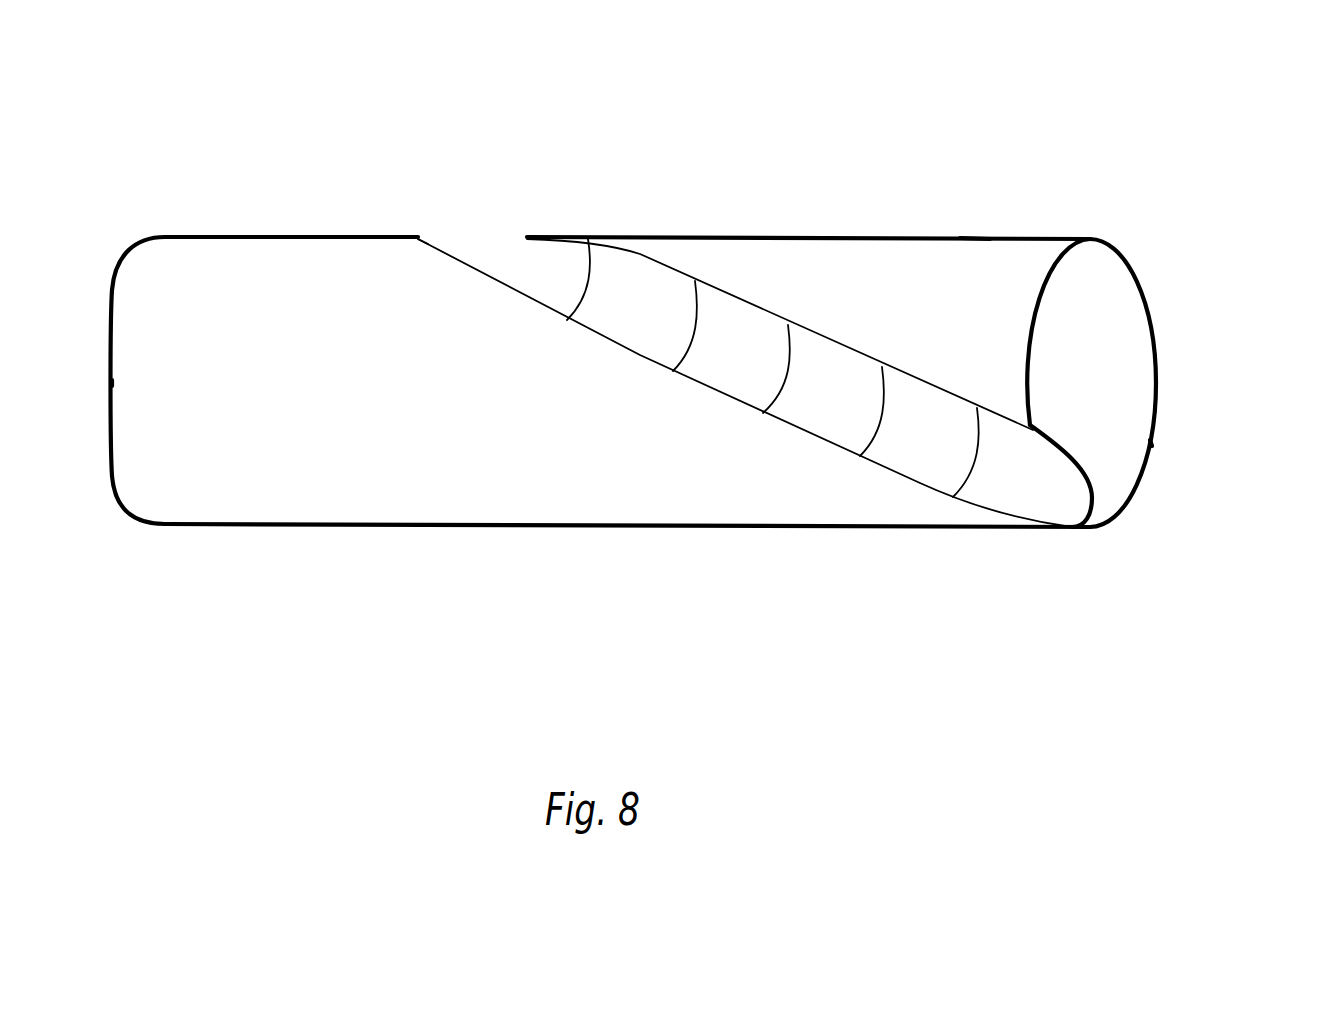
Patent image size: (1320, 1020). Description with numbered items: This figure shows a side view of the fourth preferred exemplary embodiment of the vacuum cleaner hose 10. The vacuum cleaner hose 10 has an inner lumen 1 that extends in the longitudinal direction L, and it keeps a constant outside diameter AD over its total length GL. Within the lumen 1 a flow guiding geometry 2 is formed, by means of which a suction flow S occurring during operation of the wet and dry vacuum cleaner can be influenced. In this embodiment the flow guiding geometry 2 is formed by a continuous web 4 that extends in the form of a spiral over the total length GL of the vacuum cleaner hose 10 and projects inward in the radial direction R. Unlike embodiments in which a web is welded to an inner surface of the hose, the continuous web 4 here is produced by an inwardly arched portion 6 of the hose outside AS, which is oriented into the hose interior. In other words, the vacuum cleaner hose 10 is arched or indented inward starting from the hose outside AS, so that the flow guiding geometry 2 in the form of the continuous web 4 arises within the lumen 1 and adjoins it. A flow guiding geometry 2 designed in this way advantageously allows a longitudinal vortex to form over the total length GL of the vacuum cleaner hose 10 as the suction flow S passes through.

The vacuum cleaner hose 10 is at (915, 147).
The inner lumen 1 is at (1118, 373).
The flow guiding geometry 2 is at (545, 268).
The continuous web 4 is at (1097, 500).
The inwardly arched portion 6 is at (740, 338).
The outside diameter AD is at (216, 232).
The radial direction R is at (428, 213).
The longitudinal direction L is at (560, 85).
The hose outside AS is at (972, 283).
The suction flow S is at (1115, 450).
The total length GL is at (198, 607).